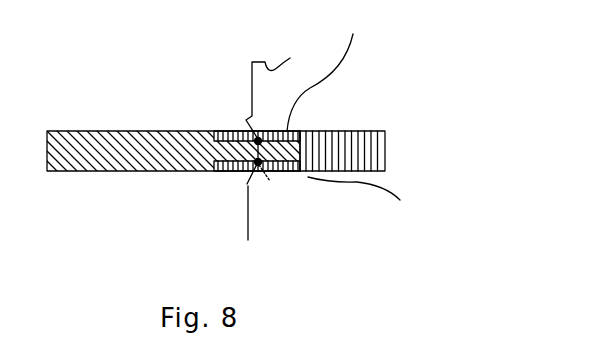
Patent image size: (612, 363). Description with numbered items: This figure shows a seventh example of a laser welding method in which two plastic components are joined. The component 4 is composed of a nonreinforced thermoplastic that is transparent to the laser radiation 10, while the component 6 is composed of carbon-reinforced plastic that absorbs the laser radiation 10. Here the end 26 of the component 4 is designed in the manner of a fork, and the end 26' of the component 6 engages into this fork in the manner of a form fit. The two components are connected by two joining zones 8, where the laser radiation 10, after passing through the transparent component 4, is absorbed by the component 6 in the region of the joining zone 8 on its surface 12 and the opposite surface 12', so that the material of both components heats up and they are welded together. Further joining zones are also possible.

The component 4 is at (373, 152).
The component 6 is at (132, 142).
The joining zone 8 is at (244, 130).
The laser radiation 10 is at (283, 248).
The surface 12 is at (332, 70).
The joining zone lower side 12' is at (371, 199).
The end of the component 4 26 is at (297, 110).
The end of the component 6 26' is at (225, 202).